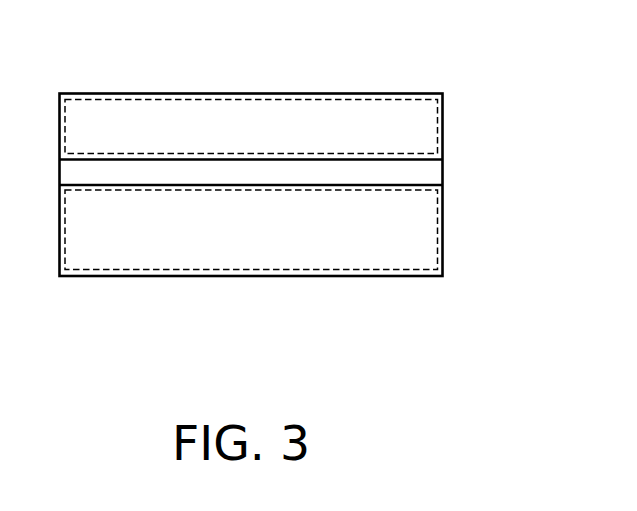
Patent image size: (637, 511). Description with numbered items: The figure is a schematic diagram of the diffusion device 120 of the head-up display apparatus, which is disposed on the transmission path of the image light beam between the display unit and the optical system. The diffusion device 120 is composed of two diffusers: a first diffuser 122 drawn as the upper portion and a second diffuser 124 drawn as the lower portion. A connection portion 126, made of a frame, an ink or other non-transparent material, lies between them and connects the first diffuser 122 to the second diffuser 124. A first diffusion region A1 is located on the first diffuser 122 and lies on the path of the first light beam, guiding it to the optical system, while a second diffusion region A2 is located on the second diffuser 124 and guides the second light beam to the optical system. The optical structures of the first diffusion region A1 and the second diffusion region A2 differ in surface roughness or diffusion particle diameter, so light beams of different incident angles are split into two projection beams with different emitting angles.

The diffusion device 120 is at (533, 353).
The first diffuser 122 is at (417, 131).
The second diffuser 124 is at (417, 233).
The connection portion 126 is at (417, 174).
The first diffusion region A1 is at (320, 99).
The second diffusion region A2 is at (317, 270).